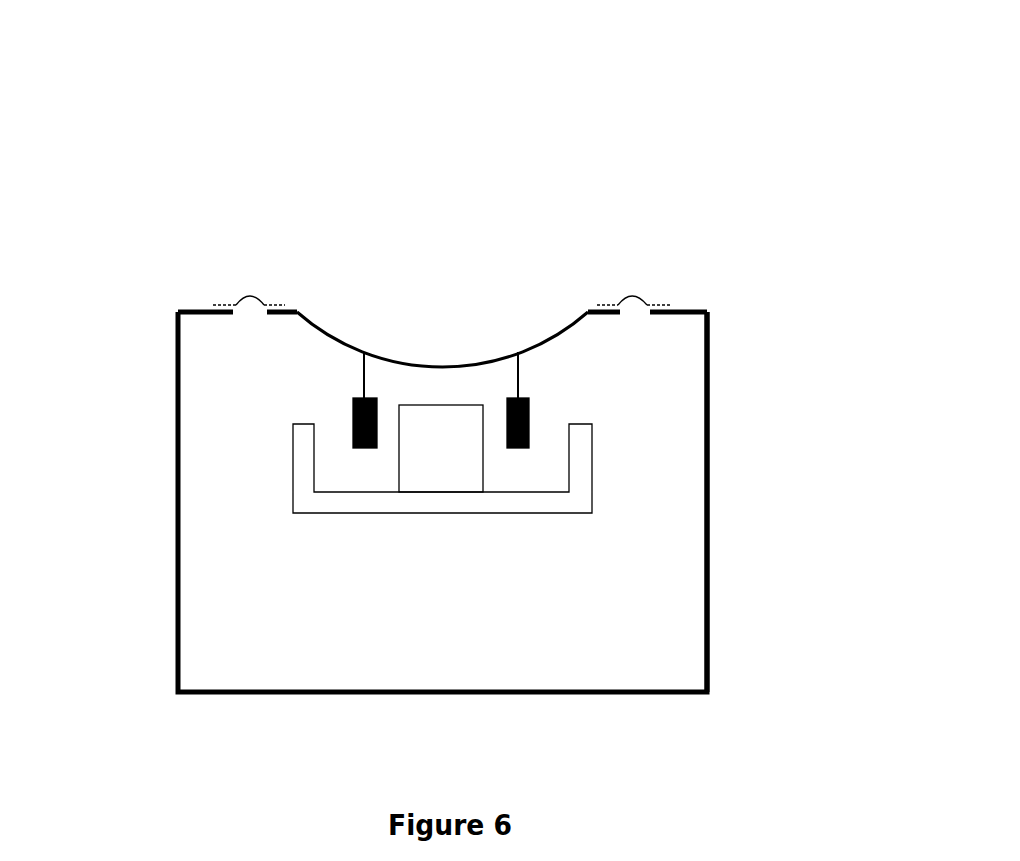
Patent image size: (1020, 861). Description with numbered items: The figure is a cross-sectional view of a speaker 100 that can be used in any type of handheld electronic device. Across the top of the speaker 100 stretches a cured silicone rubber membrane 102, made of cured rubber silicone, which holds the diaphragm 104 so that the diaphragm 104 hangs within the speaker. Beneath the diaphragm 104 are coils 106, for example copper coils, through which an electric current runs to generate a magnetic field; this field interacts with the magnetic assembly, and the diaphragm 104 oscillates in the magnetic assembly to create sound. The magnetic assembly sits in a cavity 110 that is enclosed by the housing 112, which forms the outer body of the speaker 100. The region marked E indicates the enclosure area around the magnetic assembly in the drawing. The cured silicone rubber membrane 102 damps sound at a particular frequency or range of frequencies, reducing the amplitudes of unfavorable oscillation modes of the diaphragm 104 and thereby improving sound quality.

The speaker 100 is at (473, 347).
The cured silicone rubber membrane 102 is at (230, 292).
The diaphragm 104 is at (392, 348).
The coils 106 is at (535, 395).
The cavity 110 is at (570, 632).
The housing 112 is at (718, 473).
The enclosure / cup E is at (388, 518).